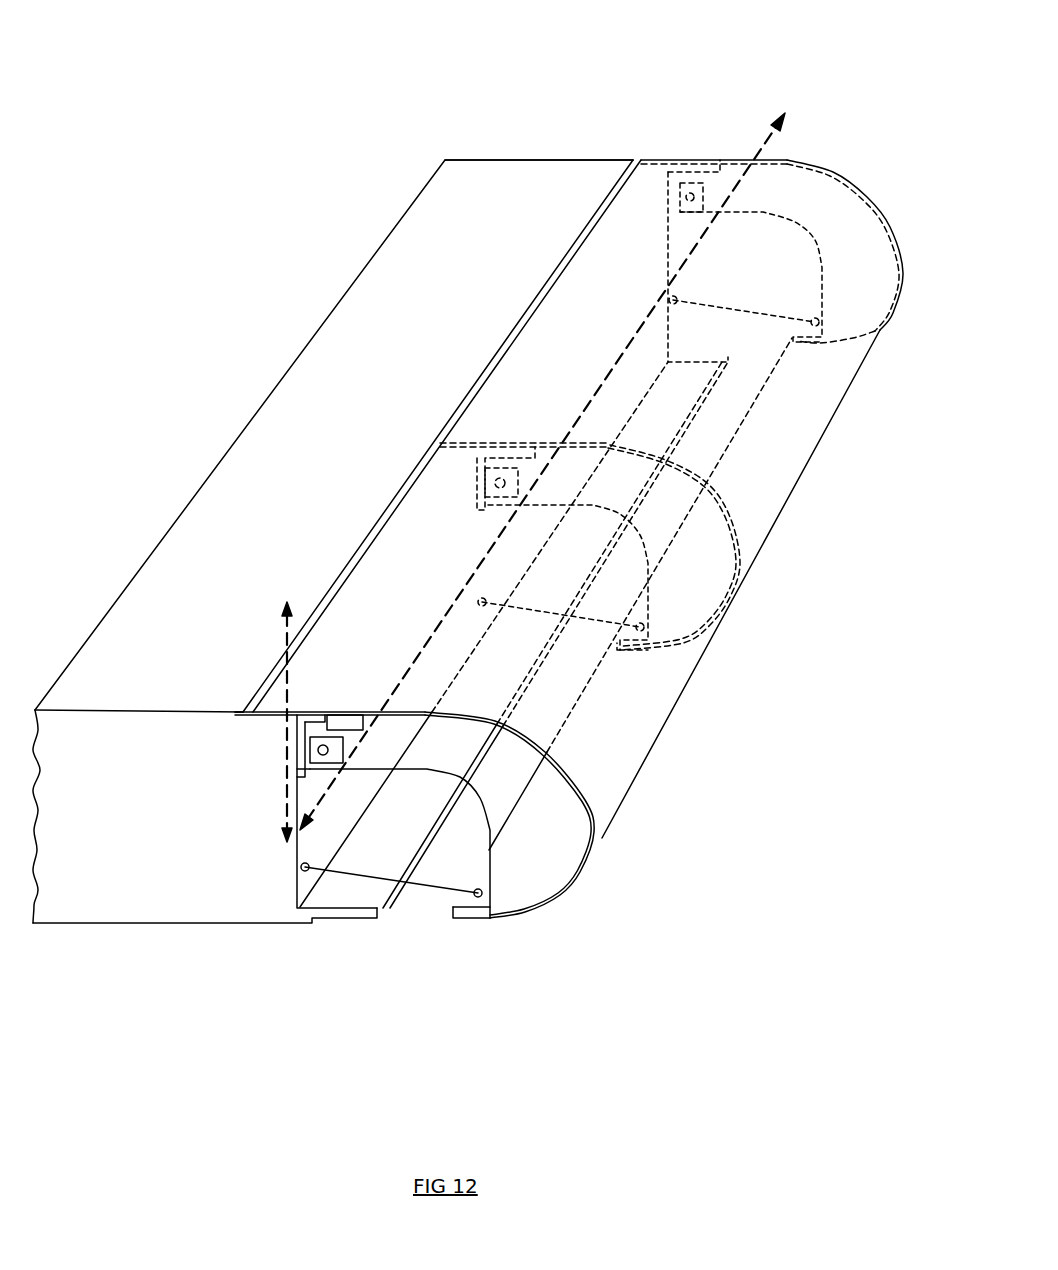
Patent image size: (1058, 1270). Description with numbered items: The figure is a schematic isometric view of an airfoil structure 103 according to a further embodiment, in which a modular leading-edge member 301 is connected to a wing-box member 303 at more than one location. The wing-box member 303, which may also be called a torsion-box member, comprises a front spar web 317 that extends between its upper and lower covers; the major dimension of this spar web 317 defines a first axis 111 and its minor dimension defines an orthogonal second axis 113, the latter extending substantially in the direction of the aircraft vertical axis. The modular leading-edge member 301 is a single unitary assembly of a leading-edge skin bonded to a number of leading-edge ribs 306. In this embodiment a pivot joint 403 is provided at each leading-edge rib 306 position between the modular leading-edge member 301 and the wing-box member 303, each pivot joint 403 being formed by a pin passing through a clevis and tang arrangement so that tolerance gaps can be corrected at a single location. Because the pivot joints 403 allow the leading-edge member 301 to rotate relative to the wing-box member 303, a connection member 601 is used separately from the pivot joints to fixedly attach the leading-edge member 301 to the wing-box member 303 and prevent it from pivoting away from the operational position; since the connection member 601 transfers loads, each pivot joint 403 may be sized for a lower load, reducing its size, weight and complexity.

The airfoil structure 103 is at (316, 235).
The wing-box member 303 is at (418, 287).
The pivot joint 403 is at (683, 178).
The first axis 111 is at (762, 138).
The second axis 113 is at (285, 750).
The leading-edge rib 306 is at (843, 210).
The modular leading-edge member 301 is at (755, 498).
The front spar web 317 is at (412, 580).
The connection member 601 is at (727, 310).